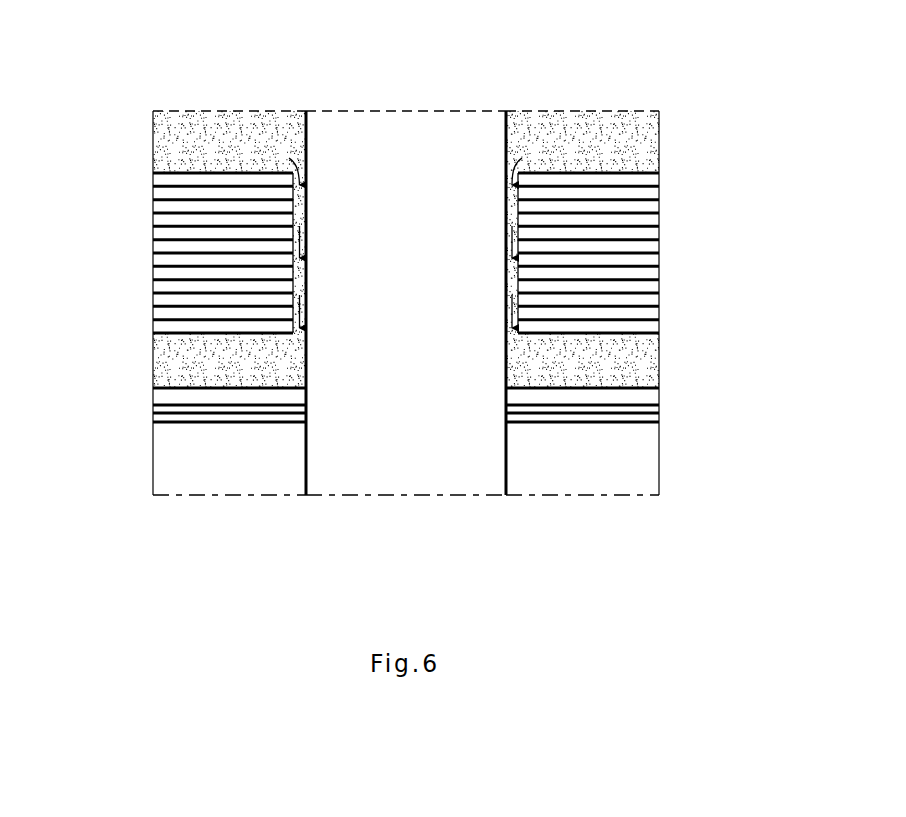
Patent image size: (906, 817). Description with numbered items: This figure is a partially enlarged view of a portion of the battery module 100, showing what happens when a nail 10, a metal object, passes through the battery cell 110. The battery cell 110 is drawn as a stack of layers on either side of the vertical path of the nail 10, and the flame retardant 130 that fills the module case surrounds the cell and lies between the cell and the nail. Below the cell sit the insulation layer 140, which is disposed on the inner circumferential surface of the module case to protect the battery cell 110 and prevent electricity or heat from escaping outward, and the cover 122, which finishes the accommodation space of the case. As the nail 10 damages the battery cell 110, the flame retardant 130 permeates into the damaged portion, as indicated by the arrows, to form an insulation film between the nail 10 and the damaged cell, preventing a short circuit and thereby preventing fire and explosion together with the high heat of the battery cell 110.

The battery module 100 is at (641, 44).
The nail 10 is at (403, 125).
The flame retardant 130 is at (645, 138).
The battery cell 110 is at (160, 233).
The insulation layer 140 is at (160, 396).
The cover 122 is at (160, 415).